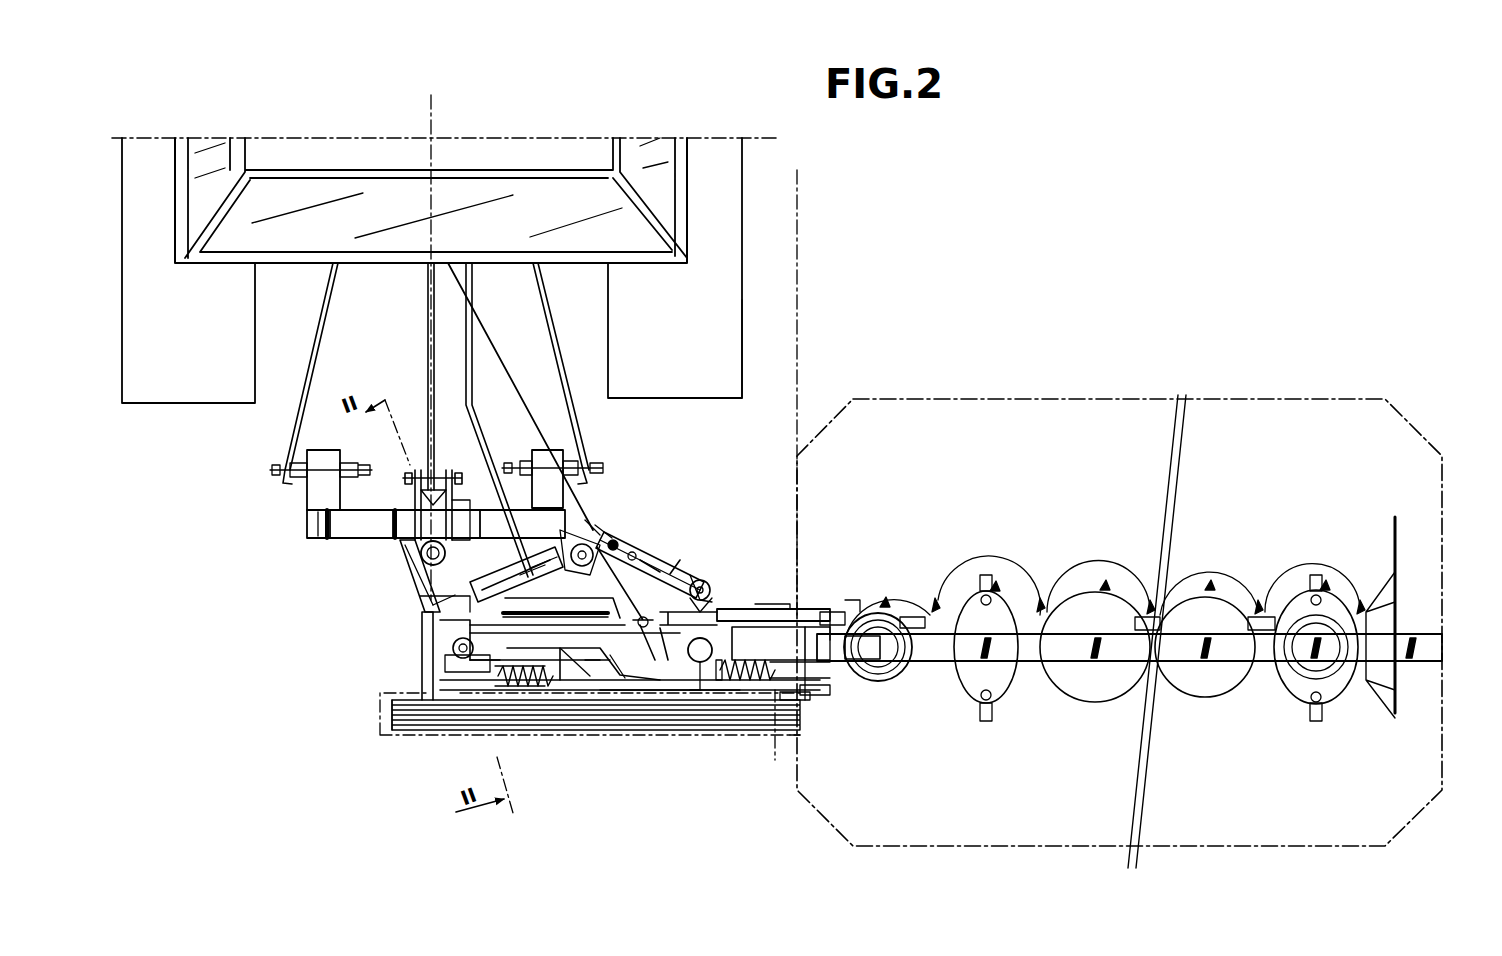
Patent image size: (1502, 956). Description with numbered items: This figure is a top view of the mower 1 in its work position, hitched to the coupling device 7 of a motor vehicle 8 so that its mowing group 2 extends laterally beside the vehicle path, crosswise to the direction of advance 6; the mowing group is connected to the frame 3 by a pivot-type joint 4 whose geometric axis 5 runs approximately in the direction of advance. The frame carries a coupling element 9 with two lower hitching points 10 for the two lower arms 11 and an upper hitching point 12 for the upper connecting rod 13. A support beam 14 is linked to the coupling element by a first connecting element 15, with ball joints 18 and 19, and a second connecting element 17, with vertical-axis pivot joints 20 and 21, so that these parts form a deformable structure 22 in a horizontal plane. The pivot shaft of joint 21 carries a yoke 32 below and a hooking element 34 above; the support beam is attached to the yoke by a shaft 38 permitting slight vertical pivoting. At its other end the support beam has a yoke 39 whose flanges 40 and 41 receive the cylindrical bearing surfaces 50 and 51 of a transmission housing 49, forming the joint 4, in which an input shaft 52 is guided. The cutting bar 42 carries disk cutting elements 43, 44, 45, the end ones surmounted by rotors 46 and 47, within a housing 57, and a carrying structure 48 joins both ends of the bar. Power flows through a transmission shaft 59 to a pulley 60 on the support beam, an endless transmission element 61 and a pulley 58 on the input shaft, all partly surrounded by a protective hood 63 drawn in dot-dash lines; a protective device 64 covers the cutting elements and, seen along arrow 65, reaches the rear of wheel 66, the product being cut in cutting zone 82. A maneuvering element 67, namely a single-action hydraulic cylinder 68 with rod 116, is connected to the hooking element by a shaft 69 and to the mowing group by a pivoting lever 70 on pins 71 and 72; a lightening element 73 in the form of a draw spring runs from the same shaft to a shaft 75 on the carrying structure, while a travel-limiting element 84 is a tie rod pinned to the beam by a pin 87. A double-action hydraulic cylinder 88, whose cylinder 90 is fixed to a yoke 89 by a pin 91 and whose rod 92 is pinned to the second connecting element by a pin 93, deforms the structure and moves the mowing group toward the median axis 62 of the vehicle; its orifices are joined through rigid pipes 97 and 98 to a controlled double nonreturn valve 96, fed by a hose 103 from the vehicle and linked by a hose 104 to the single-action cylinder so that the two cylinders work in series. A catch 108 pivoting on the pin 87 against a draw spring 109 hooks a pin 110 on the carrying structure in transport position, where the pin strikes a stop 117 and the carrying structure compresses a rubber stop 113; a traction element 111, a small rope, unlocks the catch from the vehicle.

The mower 1 is at (950, 386).
The mowing group 2 is at (1010, 505).
The frame 3 is at (305, 540).
The joint 4 is at (783, 605).
The geometric axis 5 is at (775, 775).
The direction of advance 6 is at (1237, 234).
The coupling device 7 is at (359, 342).
The motor vehicle 8 is at (742, 222).
The coupling element 9 is at (322, 539).
The lower hitching points 10 is at (300, 480).
The lower arms 11 is at (308, 362).
The upper hitching point 12 is at (416, 470).
The upper connecting rod 13 is at (428, 363).
The support beam 14 is at (555, 682).
The first connecting element 15 is at (650, 546).
The second connecting element 17 is at (440, 594).
The first joint 18 is at (586, 520).
The second joint 19 is at (706, 583).
The first joint 20 is at (405, 547).
The second joint 21 is at (452, 652).
The deformable structure 22 is at (680, 532).
The yoke 32 is at (425, 692).
The coupling element (hooking element) 34 is at (440, 630).
The shaft 38 is at (445, 662).
The yoke 39 is at (680, 692).
The flange 40 is at (820, 610).
The flange 41 is at (806, 690).
The cutting bar 42 is at (1036, 663).
The cutting element 43 is at (906, 676).
The cutting element 44 is at (1010, 598).
The cutting element 45 is at (1385, 678).
The rotor 46 is at (882, 682).
The rotor 47 is at (1300, 678).
The carrying structure 48 is at (1262, 612).
The transmission housing 49 is at (757, 657).
The cylindrical bearing surface 50 is at (770, 604).
The cylindrical bearing surface 51 is at (808, 700).
The input shaft 52 is at (796, 702).
The housing 57 is at (1097, 615).
The pulley 58 is at (748, 692).
The transmission shaft with universal joints 59 is at (438, 462).
The pulley 60 is at (430, 708).
The endless transmission element 61 is at (665, 722).
The median axis 62 is at (431, 107).
The protective hood 63 is at (380, 733).
The protective device 64 is at (1262, 848).
The arrow 65 is at (824, 382).
The wheel 66 is at (742, 372).
The maneuvering element 67 is at (572, 692).
The hydraulic cylinder 68 is at (616, 692).
The shaft 69 is at (487, 680).
The pivoting lever 70 is at (866, 606).
The pin 71 is at (826, 612).
The pin 72 is at (838, 615).
The lightening element 73 is at (783, 737).
The shaft 75 is at (852, 680).
The cutting zone 82 is at (1385, 178).
The travel-limiting element 84 is at (512, 690).
The pin 87 is at (587, 692).
The double-action hydraulic cylinder 88 is at (473, 510).
The yoke 89 is at (602, 526).
The cylinder 90 is at (584, 567).
The pin 91 is at (616, 540).
The rod 92 is at (418, 572).
The pin 93 is at (425, 600).
The controlled double nonreturn valve 96 is at (512, 572).
The rigid pipe 97 is at (553, 546).
The rigid pipe 98 is at (446, 553).
The hose 103 is at (472, 395).
The hose 104 is at (624, 600).
The catch 108 is at (685, 664).
The draw spring 109 is at (715, 611).
The pin 110 is at (906, 620).
The traction element 111 is at (495, 352).
The rubber stop 113 is at (692, 693).
The rod 116 is at (692, 575).
The stop 117 is at (642, 628).